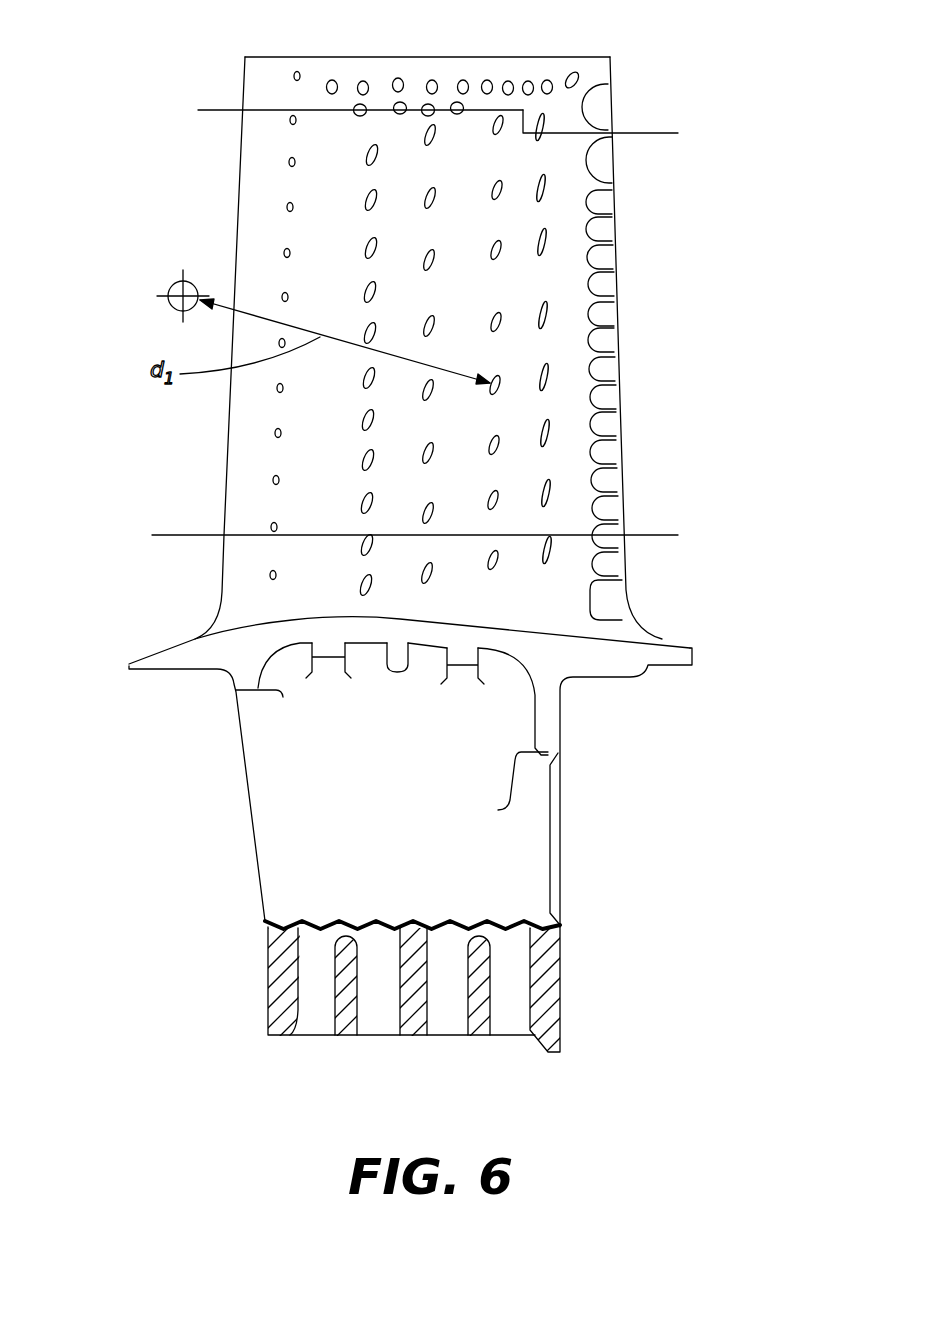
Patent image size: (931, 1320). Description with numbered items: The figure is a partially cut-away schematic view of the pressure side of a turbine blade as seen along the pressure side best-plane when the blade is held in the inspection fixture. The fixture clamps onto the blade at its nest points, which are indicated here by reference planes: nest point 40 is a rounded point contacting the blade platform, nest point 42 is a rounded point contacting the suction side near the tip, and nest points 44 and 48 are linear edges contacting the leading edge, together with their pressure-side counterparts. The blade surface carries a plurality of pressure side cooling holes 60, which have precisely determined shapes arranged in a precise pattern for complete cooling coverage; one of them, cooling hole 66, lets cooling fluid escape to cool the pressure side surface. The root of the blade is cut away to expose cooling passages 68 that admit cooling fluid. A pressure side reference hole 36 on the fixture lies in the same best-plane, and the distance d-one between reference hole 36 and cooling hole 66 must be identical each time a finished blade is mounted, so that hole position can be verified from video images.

The reference point 36 is at (165, 283).
The nest point 40 is at (670, 635).
The nest point 42 is at (622, 130).
The nest point 44 is at (240, 105).
The nest point 48 is at (218, 528).
The cooling holes 60 is at (552, 285).
The cooling hole 66 is at (503, 372).
The cooling passages 68 is at (313, 1027).